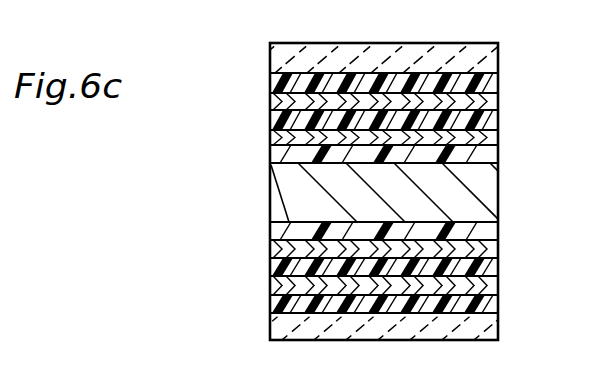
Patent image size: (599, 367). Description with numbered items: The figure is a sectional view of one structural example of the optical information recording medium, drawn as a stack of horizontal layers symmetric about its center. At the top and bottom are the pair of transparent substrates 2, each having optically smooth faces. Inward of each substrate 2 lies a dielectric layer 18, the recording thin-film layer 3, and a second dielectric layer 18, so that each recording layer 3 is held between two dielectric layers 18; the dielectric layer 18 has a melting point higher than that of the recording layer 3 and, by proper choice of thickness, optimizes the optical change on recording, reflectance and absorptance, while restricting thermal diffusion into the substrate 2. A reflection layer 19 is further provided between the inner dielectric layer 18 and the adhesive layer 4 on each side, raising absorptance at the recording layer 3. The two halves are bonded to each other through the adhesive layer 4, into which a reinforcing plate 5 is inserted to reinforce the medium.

The transparent substrate 2 is at (502, 58).
The recording thin-film layer 3 is at (270, 101).
The adhesive layer 4 is at (502, 160).
The reinforcing plate 5 is at (270, 193).
The dielectric layer 18 is at (502, 78).
The reflection layer 19 is at (502, 145).